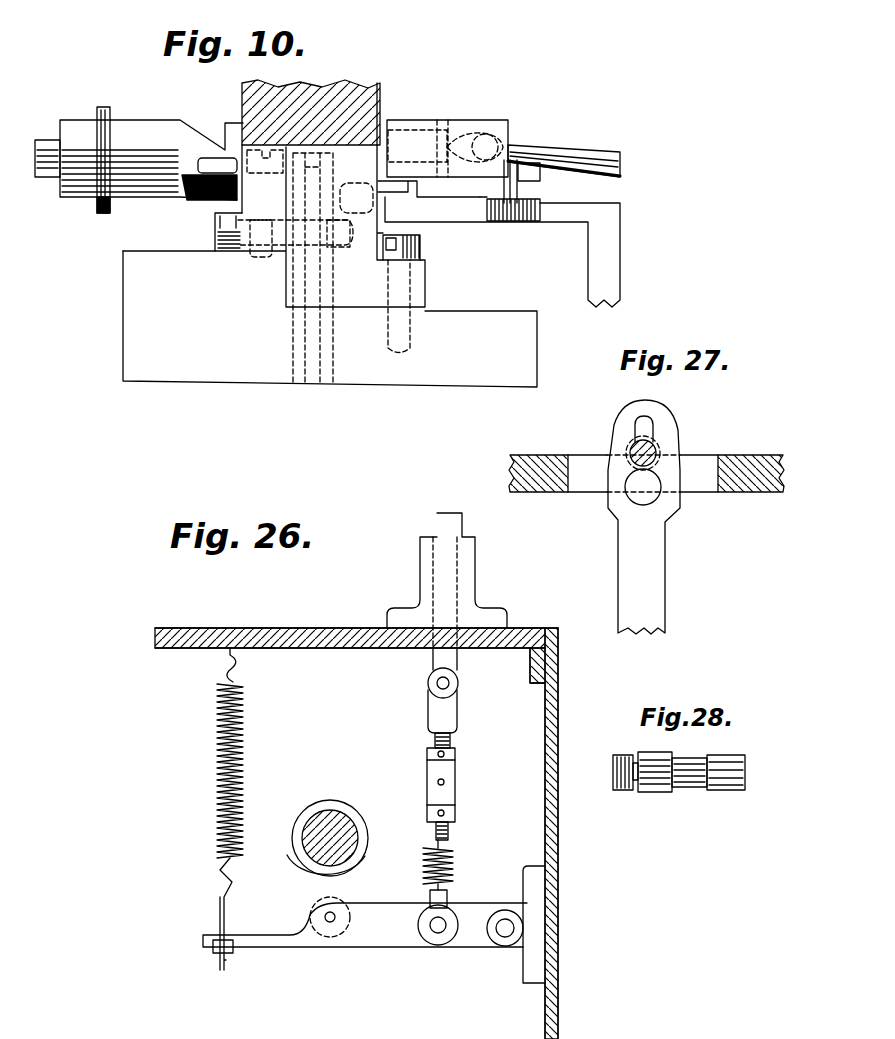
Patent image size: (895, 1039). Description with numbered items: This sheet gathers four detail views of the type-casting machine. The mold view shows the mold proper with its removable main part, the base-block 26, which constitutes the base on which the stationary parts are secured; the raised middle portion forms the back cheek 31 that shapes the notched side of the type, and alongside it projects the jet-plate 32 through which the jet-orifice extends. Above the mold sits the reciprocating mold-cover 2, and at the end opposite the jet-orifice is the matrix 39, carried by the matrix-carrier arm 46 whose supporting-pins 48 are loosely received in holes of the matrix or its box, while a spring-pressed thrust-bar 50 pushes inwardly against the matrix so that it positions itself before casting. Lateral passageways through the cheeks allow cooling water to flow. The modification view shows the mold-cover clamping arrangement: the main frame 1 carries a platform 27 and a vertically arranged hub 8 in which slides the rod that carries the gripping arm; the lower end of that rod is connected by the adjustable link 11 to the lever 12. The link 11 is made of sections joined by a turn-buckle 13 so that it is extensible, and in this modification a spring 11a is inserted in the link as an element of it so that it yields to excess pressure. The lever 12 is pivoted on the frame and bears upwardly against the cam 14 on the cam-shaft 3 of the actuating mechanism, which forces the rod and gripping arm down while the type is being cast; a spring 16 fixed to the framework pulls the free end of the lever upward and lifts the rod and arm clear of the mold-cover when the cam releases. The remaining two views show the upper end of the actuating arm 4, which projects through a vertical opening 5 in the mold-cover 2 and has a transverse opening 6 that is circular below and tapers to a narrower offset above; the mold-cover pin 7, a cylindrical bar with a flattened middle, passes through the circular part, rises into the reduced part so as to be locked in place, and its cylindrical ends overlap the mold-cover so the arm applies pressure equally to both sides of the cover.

In FIG. 10, the mold-cover 2 is at (357, 102).
In FIG. 27, the mold-cover 2 is at (745, 465).
In FIG. 10, the jet-plate 32 is at (262, 201).
In FIG. 10, the back cheek 31 is at (274, 232).
In FIG. 10, the lever 12 is at (314, 213).
In FIG. 26, the lever 12 is at (392, 935).
In FIG. 10, the base-block 26 is at (252, 371).
In FIG. 10, the matrix 39 is at (412, 188).
In FIG. 10, the thrust-bar 50 is at (571, 150).
In FIG. 10, the supporting-pins 48 is at (532, 190).
In FIG. 10, the matrix-carrier arm 46 is at (565, 212).
In FIG. 27, the vertical opening 5 is at (697, 466).
In FIG. 27, the actuating arm 4 is at (650, 588).
In FIG. 27, the transverse opening 6 is at (640, 422).
In FIG. 27, the mold-cover pin 7 is at (637, 450).
In FIG. 28, the mold-cover pin 7 is at (660, 758).
In FIG. 26, the main frame 1 is at (322, 652).
In FIG. 26, the platform 27 is at (544, 760).
In FIG. 26, the hub 8 is at (468, 592).
In FIG. 26, the adjustable link 11 is at (450, 745).
In FIG. 26, the turn-buckle 13 is at (452, 792).
In FIG. 26, the spring 11a is at (455, 862).
In FIG. 26, the spring 16 is at (240, 780).
In FIG. 26, the cam-shaft 3 is at (335, 824).
In FIG. 26, the cam 14 is at (308, 882).